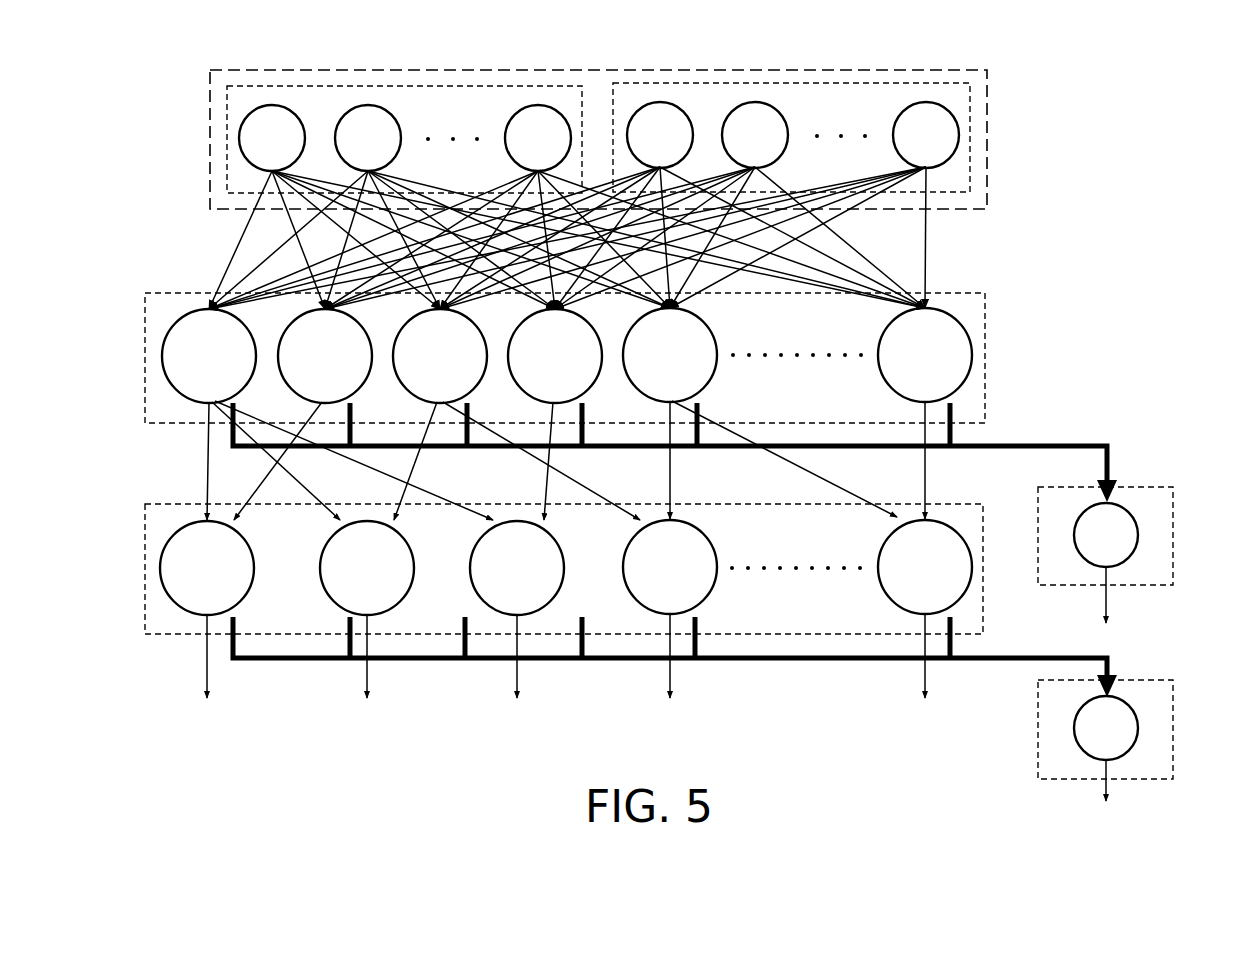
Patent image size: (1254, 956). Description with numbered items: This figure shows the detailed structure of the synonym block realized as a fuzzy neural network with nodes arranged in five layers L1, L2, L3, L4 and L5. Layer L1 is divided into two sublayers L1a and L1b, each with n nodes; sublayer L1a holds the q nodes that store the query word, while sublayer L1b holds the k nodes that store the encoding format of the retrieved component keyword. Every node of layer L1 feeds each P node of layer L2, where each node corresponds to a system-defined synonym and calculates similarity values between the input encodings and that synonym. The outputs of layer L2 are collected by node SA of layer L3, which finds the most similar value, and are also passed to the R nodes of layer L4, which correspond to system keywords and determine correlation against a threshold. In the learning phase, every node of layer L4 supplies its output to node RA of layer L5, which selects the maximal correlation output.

The first layer L1 is at (960, 70).
The first sublayer L1a is at (268, 86).
The second sublayer L1b is at (655, 83).
The second layer L2 is at (962, 293).
The third layer L3 is at (1150, 487).
The fourth layer L4 is at (168, 504).
The fifth layer L5 is at (1150, 680).